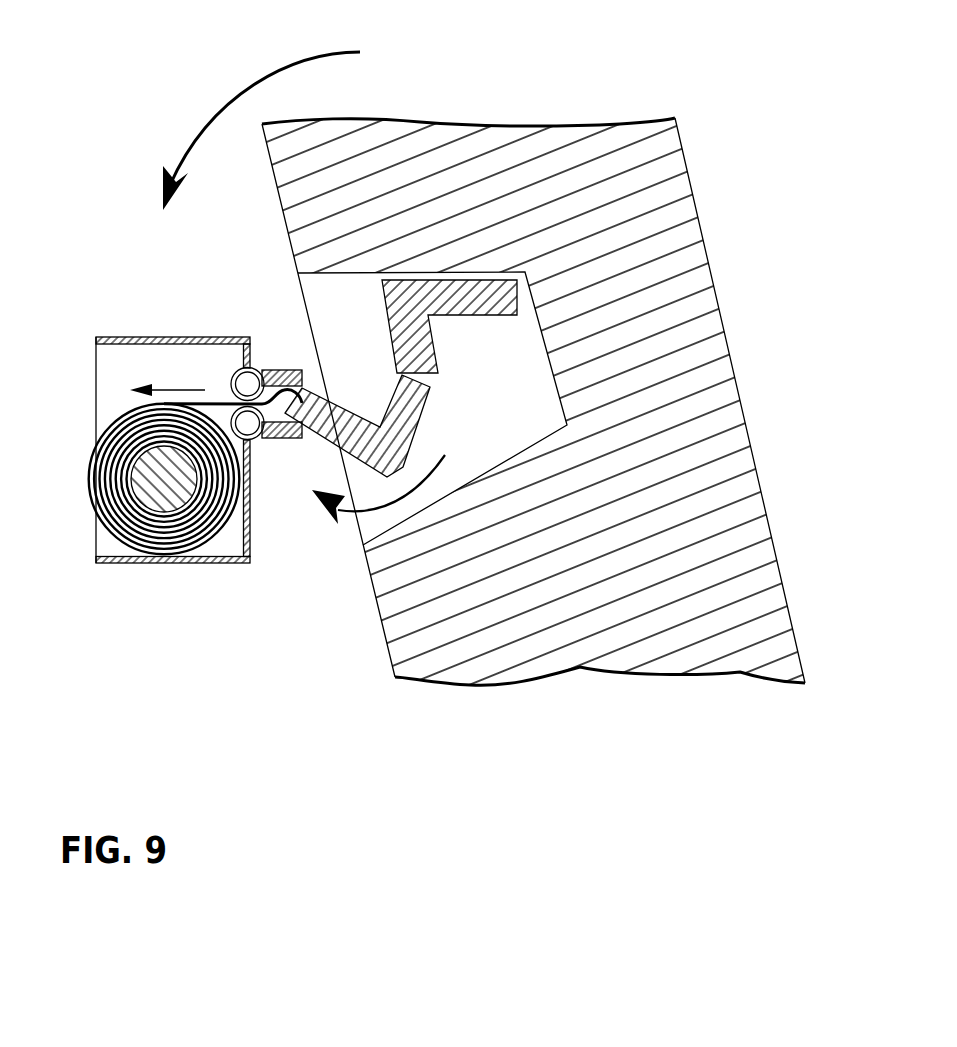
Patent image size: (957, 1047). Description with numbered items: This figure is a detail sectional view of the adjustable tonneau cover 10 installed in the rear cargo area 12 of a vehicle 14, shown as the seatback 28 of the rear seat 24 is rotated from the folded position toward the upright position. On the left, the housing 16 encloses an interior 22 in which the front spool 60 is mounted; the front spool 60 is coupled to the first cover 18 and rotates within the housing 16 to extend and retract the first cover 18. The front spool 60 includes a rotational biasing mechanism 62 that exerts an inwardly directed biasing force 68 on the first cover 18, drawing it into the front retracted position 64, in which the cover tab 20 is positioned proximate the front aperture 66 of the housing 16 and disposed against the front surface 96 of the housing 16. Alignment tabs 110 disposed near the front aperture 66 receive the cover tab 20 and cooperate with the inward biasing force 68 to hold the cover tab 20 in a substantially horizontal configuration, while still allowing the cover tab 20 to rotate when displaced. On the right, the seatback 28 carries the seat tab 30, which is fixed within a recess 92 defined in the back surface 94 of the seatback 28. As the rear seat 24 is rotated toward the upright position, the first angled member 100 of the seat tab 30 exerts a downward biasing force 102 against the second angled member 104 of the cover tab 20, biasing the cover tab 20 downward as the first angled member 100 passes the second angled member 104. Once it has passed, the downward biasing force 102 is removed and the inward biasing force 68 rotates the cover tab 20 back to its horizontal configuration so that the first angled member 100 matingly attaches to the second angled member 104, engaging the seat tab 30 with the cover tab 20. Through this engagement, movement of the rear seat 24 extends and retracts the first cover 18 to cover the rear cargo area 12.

The adjustable tonneau cover 10 is at (124, 186).
The rear cargo area 12 is at (173, 98).
The vehicle 14 is at (543, 57).
The housing 16 is at (202, 563).
The first cover 18 is at (200, 401).
The cover tab 20 is at (310, 431).
The interior 22 is at (172, 363).
The rear seat 24 is at (735, 440).
The seatback 28 is at (670, 167).
The seat tab 30 is at (497, 282).
The front spool 60 is at (92, 487).
The rotational biasing mechanism 62 is at (112, 535).
The front retracted position 64 is at (259, 343).
The front aperture 66 is at (210, 388).
The inwardly directed biasing force 68 is at (168, 388).
The recess 92 is at (528, 323).
The back surface 94 is at (382, 632).
The front surface 96 is at (253, 493).
The first angled member 100 is at (410, 408).
The downward biasing force 102 is at (358, 538).
The second angled member 104 is at (422, 353).
The alignment tabs 110 is at (291, 367).